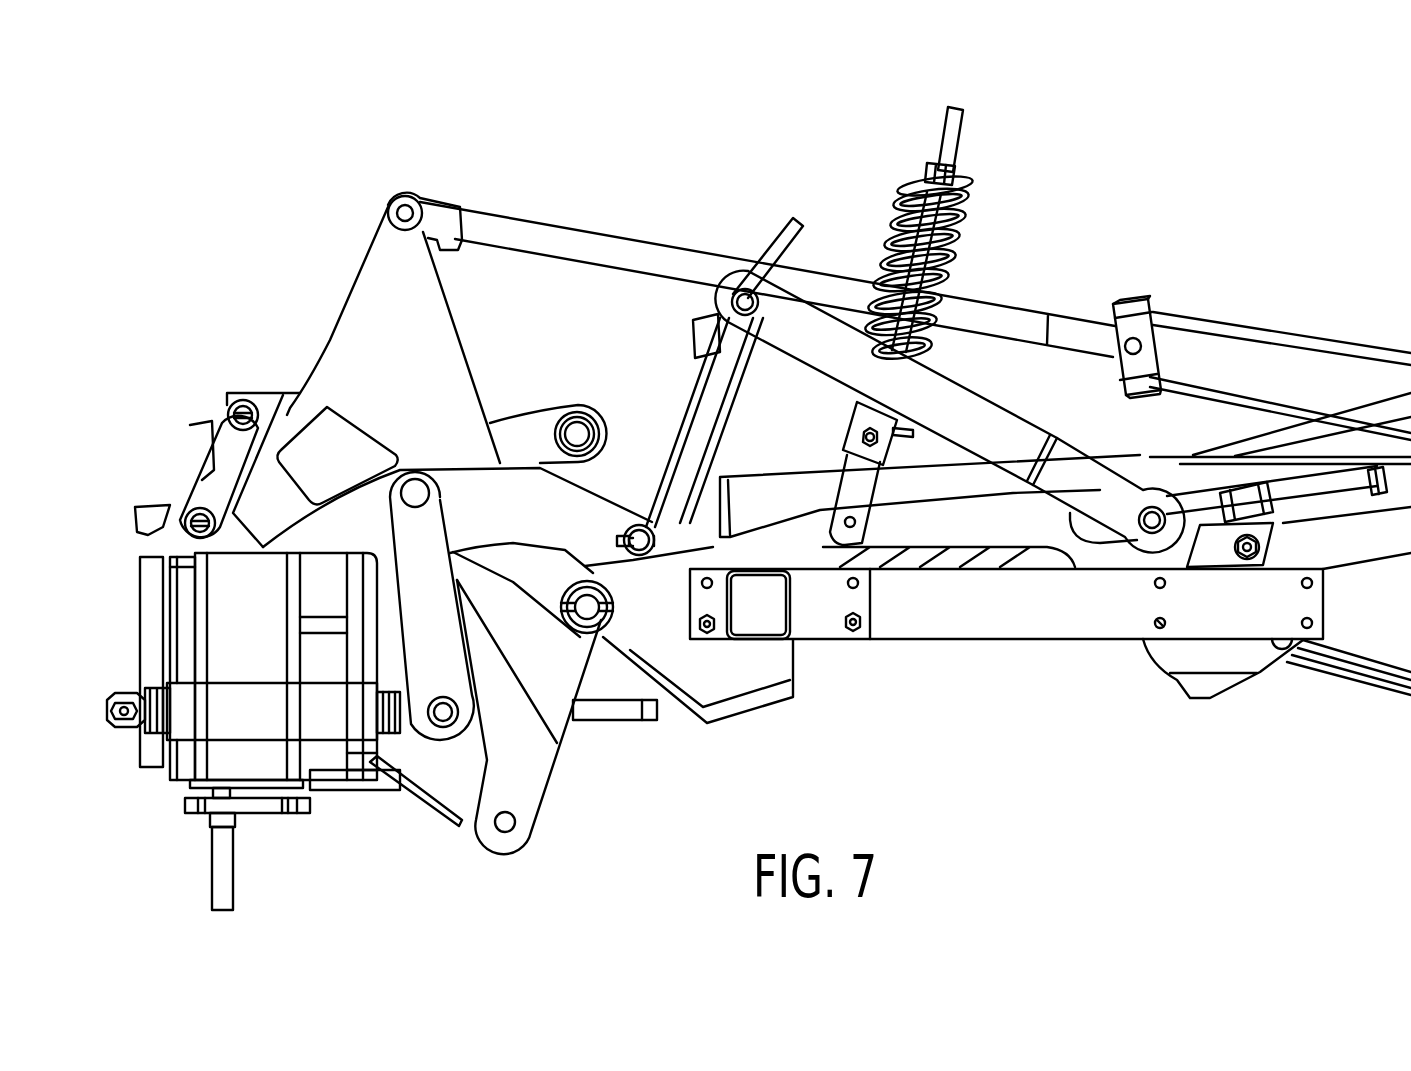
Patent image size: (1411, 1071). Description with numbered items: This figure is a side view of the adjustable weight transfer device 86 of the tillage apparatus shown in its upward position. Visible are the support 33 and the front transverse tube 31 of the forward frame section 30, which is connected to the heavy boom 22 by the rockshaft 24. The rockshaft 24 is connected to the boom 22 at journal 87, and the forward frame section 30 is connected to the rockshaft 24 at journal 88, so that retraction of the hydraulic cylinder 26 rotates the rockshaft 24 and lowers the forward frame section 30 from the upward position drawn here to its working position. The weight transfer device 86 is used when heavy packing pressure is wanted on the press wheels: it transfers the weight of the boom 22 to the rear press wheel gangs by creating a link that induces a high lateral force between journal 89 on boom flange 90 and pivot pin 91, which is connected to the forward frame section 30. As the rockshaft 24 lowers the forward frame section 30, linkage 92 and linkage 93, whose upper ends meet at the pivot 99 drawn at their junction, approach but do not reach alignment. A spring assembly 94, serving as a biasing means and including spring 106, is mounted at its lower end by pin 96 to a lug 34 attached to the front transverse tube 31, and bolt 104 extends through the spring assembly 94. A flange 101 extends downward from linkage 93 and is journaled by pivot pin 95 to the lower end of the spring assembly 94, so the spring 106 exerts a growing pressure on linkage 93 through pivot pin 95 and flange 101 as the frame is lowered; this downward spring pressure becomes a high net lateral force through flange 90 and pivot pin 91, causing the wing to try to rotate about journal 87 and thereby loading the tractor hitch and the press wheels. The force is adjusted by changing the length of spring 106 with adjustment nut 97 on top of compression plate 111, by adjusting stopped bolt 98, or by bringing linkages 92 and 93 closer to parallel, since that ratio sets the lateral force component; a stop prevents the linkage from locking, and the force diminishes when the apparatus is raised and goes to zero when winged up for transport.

The boom 22 is at (160, 789).
The rockshaft 24 is at (385, 345).
The hydraulic cylinder 26 is at (1240, 352).
The forward frame section 30 is at (1020, 650).
The front transverse tube 31 is at (793, 623).
The support 33 is at (947, 625).
The lug 34 is at (797, 547).
The adjustable weight transfer device 86 is at (1105, 685).
The journal 87 is at (498, 830).
The journal 88 is at (587, 620).
The journal 89 is at (640, 560).
The boom flange 90 is at (523, 500).
The pivot pin 91 is at (1145, 535).
The linkage 92 is at (683, 395).
The linkage 93 is at (1025, 445).
The spring assembly 94 is at (877, 200).
The pivot pin 95 is at (867, 435).
The pin 96 is at (855, 520).
The adjustment nut 97 is at (950, 177).
The stopped bolt 98 is at (1333, 493).
The upper pivot 99 is at (745, 297).
The flange 101 is at (892, 431).
The bolt 104 is at (953, 117).
The spring 106 is at (957, 242).
The compression plate 111 is at (970, 194).